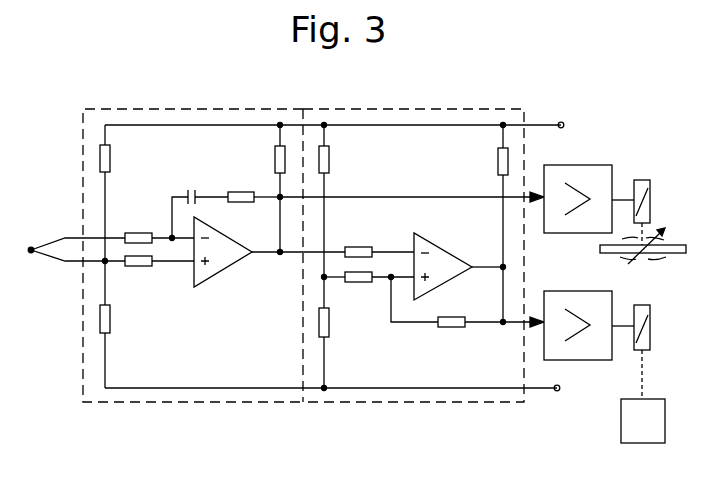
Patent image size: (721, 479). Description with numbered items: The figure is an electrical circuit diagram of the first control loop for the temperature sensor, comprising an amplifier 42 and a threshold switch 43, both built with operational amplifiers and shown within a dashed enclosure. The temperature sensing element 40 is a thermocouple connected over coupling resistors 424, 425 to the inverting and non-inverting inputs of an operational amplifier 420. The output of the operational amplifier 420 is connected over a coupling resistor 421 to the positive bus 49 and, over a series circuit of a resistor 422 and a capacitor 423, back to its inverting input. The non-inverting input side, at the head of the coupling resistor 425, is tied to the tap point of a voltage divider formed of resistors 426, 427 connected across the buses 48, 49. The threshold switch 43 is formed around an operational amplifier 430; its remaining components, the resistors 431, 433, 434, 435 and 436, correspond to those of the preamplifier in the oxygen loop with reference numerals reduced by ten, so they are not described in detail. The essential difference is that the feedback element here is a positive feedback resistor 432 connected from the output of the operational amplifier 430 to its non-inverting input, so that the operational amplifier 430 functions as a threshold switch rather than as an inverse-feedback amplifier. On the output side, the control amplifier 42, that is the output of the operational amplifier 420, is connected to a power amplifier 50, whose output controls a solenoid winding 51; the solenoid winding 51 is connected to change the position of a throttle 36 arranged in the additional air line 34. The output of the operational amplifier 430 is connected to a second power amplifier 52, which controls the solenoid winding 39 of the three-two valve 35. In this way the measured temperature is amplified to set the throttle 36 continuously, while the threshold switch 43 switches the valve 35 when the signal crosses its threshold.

The light beam / plate 34 is at (676, 246).
The 3/2 valve 35 is at (665, 421).
The throttle 36 is at (667, 259).
The solenoid winding 39 is at (640, 305).
The temperature sensing element 40 is at (31, 253).
The amplifier 42 is at (178, 112).
The threshold switch 43 is at (415, 112).
The bus 48 is at (560, 389).
The positive bus 49 is at (563, 124).
The power amplifier 50 is at (572, 171).
The solenoid winding 51 is at (640, 180).
The power amplifier 52 is at (569, 297).
The operational amplifier 420 is at (222, 275).
The coupling resistor 421 is at (275, 160).
The resistor 422 is at (241, 192).
The capacitor 423 is at (191, 190).
The coupling resistor 424 is at (139, 229).
The coupling resistor 425 is at (138, 266).
The resistor 426 is at (110, 158).
The resistor 427 is at (110, 321).
The operational amplifier 430 is at (440, 260).
The resistor 431 is at (498, 165).
The positive feedback resistor 432 is at (452, 327).
The resistor 433 is at (360, 247).
The resistor 434 is at (360, 282).
The resistor 435 is at (329, 160).
The resistor 436 is at (329, 321).